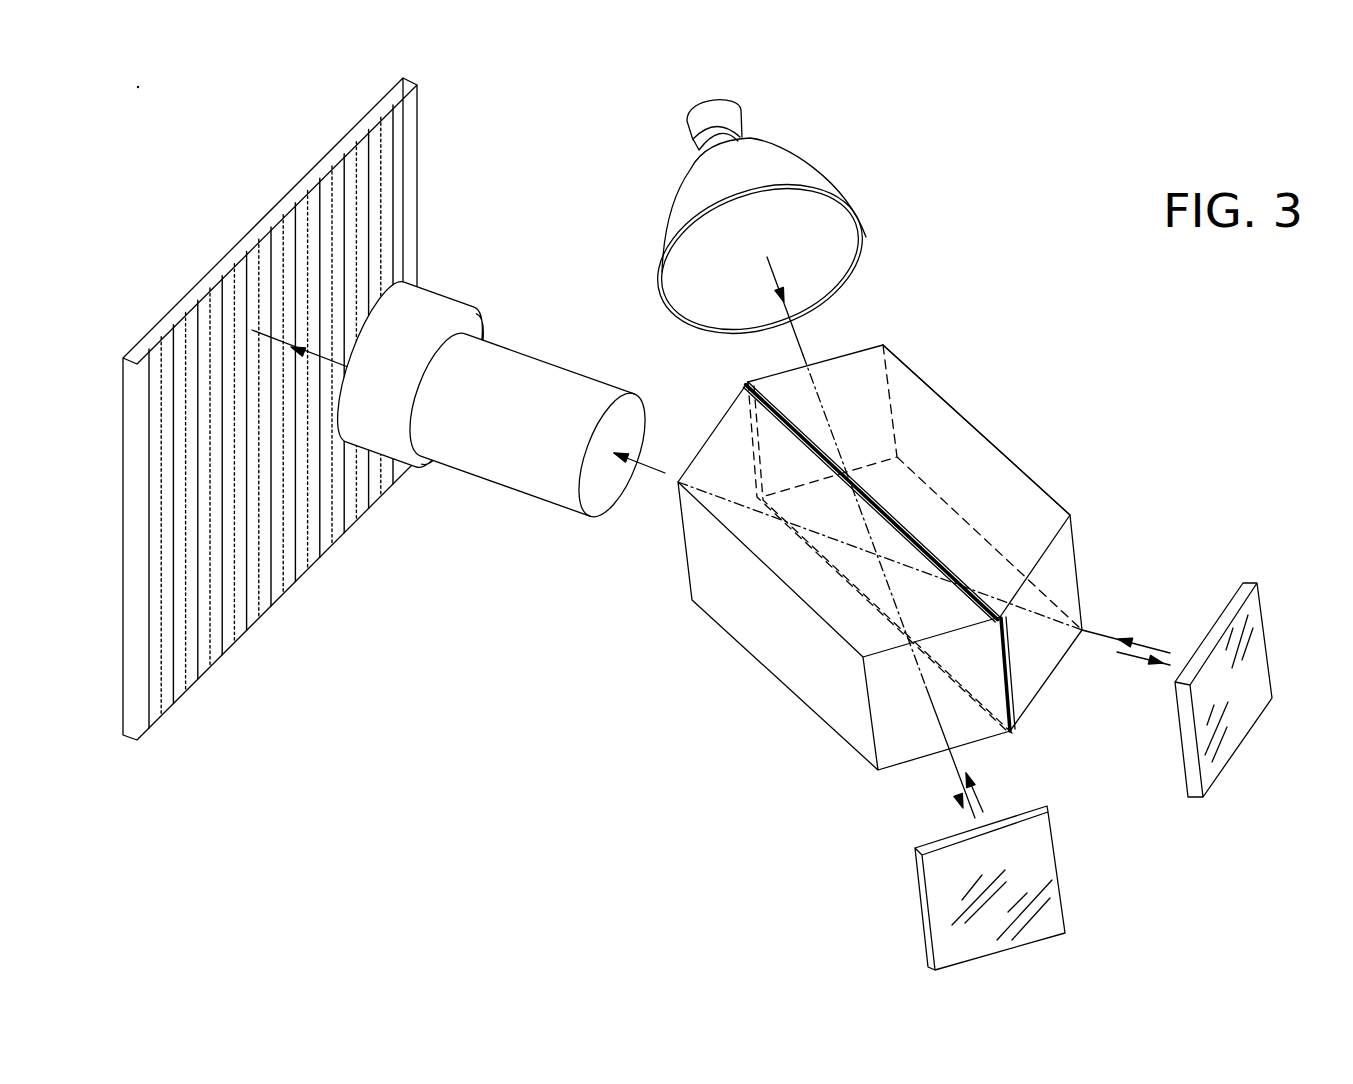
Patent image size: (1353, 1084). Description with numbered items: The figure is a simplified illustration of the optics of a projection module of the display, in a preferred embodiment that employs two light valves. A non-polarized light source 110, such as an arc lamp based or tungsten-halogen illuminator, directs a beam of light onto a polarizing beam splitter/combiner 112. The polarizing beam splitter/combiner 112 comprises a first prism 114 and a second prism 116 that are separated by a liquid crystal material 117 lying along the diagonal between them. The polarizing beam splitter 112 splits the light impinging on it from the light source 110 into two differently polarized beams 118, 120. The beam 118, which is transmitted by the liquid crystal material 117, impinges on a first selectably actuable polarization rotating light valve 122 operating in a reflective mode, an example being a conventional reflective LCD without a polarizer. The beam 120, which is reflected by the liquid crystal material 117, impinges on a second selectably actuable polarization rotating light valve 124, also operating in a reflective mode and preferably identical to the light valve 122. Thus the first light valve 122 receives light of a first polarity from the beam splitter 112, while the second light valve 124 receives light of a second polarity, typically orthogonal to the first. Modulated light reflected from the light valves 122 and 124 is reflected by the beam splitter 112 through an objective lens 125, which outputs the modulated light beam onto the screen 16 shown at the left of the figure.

The screen 16 is at (410, 188).
The non-polarized light source 110 is at (792, 172).
The polarizing beam splitter/combiner 112 is at (917, 403).
The first prism 114 is at (702, 583).
The second prism 116 is at (1037, 493).
The liquid crystal material 117 is at (746, 382).
The beam 118 is at (953, 790).
The beam 120 is at (1142, 663).
The first selectably actuable polarization rotating light valve 122 is at (1047, 862).
The second selectably actuable polarization rotating light valve 124 is at (1260, 667).
The objective lens 125 is at (465, 462).